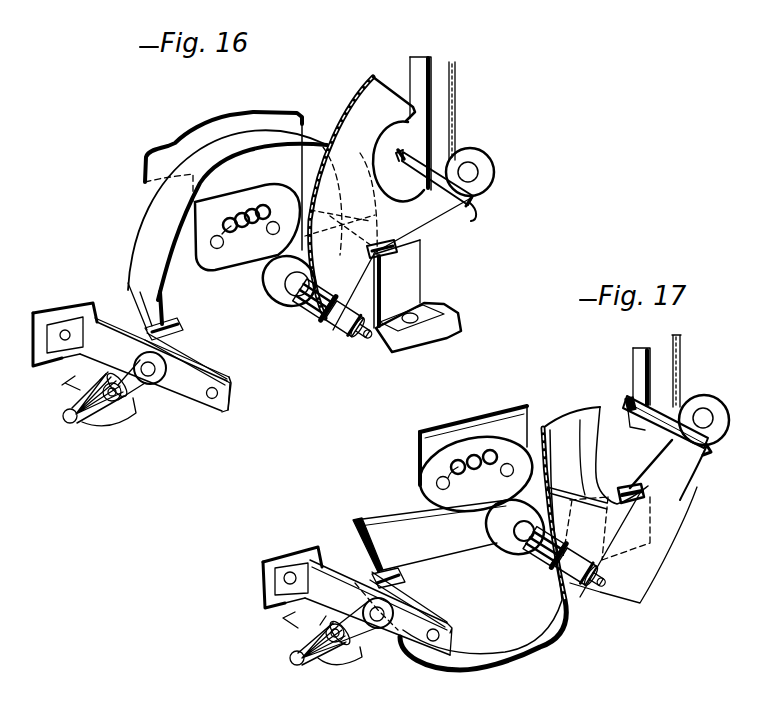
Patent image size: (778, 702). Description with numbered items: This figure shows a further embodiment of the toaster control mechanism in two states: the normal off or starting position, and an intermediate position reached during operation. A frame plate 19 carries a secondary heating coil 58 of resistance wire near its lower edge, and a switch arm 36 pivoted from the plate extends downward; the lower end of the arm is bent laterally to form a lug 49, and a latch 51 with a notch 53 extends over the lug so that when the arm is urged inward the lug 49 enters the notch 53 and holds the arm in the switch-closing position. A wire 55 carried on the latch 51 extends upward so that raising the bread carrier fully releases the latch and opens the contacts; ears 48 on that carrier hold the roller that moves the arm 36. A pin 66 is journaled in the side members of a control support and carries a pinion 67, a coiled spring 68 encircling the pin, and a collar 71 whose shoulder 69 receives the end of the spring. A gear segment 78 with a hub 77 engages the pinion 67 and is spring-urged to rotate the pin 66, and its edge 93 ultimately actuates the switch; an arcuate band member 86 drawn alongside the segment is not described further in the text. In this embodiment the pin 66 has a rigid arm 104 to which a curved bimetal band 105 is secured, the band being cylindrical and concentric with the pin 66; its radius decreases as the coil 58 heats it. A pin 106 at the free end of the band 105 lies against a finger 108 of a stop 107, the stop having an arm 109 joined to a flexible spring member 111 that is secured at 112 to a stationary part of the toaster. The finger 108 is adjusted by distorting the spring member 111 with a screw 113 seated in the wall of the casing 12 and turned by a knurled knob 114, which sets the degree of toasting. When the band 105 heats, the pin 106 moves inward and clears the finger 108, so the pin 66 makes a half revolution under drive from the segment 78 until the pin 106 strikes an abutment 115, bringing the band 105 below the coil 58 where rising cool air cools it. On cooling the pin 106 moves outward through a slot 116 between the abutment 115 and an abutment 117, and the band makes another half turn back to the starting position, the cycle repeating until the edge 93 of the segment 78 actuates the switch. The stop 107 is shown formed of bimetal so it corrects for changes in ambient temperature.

In FIG. 16, the casing 12 is at (115, 420).
In FIG. 17, the casing 12 is at (343, 667).
In FIG. 16, the frame plate 19 is at (183, 136).
In FIG. 17, the frame plate 19 is at (431, 427).
In FIG. 16, the switch arm 36 is at (422, 57).
In FIG. 17, the switch arm 36 is at (639, 352).
In FIG. 17, the ears 48 is at (665, 423).
In FIG. 16, the lug 49 is at (406, 174).
In FIG. 16, the latch 51 is at (478, 221).
In FIG. 17, the latch 51 is at (712, 452).
In FIG. 16, the notch 53 is at (403, 151).
In FIG. 17, the notch 53 is at (628, 400).
In FIG. 16, the wire 55 is at (456, 67).
In FIG. 17, the wire 55 is at (682, 341).
In FIG. 16, the coil 58 is at (238, 232).
In FIG. 17, the coil 58 is at (493, 437).
In FIG. 16, the pin 66 is at (362, 340).
In FIG. 17, the pin 66 is at (601, 588).
In FIG. 16, the pinion 67 is at (298, 310).
In FIG. 17, the pinion 67 is at (528, 553).
In FIG. 16, the coiled spring 68 is at (317, 325).
In FIG. 17, the coiled spring 68 is at (552, 563).
In FIG. 16, the shoulder 69 is at (327, 334).
In FIG. 17, the shoulder 69 is at (568, 578).
In FIG. 16, the collar 71 is at (331, 334).
In FIG. 16, the hub 77 is at (482, 160).
In FIG. 17, the hub 77 is at (708, 399).
In FIG. 16, the gear segment 78 is at (390, 139).
In FIG. 17, the gear segment 78 is at (573, 427).
In FIG. 16, the arcuate band 86 is at (382, 84).
In FIG. 16, the edge 93 is at (431, 189).
In FIG. 17, the edge 93 is at (697, 472).
In FIG. 16, the rigid arm 104 is at (343, 236).
In FIG. 17, the rigid arm 104 is at (430, 536).
In FIG. 16, the curved bimetal band 105 is at (265, 132).
In FIG. 17, the curved bimetal band 105 is at (531, 657).
In FIG. 16, the pin 106 is at (178, 330).
In FIG. 17, the pin 106 is at (581, 485).
In FIG. 16, the stop 107 is at (127, 314).
In FIG. 16, the finger 108 is at (190, 343).
In FIG. 17, the finger 108 is at (407, 582).
In FIG. 16, the arm 109 is at (205, 358).
In FIG. 17, the arm 109 is at (433, 609).
In FIG. 16, the flexible spring member 111 is at (180, 380).
In FIG. 17, the flexible spring member 111 is at (418, 627).
In FIG. 16, the securing point 112 is at (64, 331).
In FIG. 17, the securing point 112 is at (287, 552).
In FIG. 16, the screw 113 is at (147, 402).
In FIG. 17, the screw 113 is at (368, 645).
In FIG. 16, the knurled knob 114 is at (69, 424).
In FIG. 17, the knurled knob 114 is at (295, 665).
In FIG. 16, the abutment 115 is at (420, 263).
In FIG. 17, the abutment 115 is at (608, 500).
In FIG. 16, the slot 116 is at (397, 253).
In FIG. 17, the slot 116 is at (622, 488).
In FIG. 16, the abutment 117 is at (420, 239).
In FIG. 17, the abutment 117 is at (650, 498).